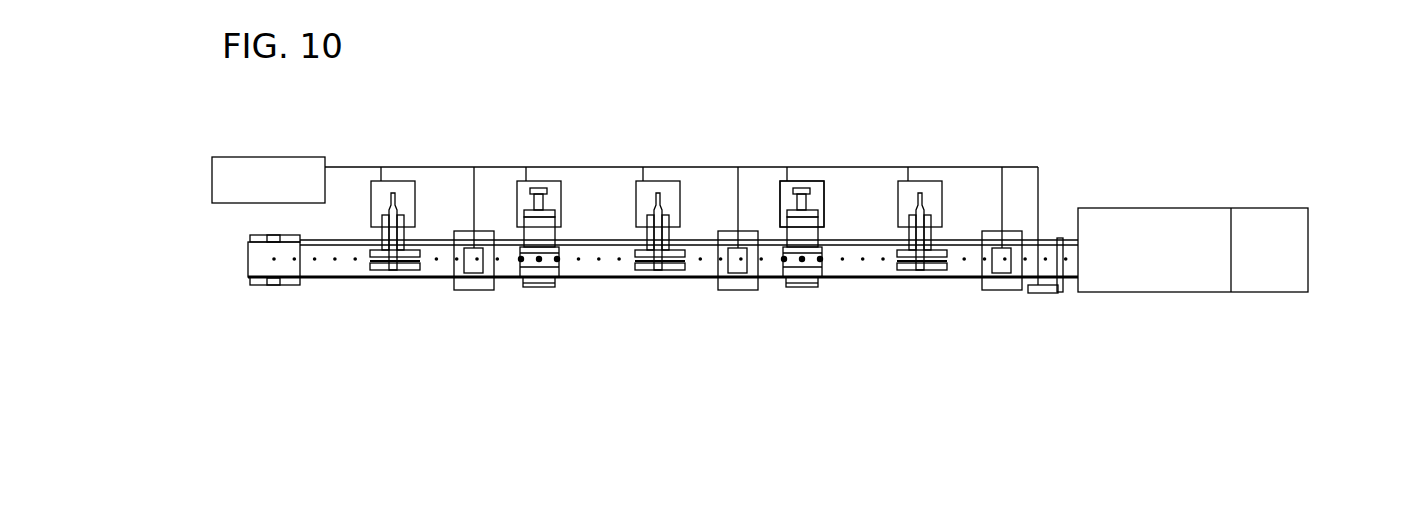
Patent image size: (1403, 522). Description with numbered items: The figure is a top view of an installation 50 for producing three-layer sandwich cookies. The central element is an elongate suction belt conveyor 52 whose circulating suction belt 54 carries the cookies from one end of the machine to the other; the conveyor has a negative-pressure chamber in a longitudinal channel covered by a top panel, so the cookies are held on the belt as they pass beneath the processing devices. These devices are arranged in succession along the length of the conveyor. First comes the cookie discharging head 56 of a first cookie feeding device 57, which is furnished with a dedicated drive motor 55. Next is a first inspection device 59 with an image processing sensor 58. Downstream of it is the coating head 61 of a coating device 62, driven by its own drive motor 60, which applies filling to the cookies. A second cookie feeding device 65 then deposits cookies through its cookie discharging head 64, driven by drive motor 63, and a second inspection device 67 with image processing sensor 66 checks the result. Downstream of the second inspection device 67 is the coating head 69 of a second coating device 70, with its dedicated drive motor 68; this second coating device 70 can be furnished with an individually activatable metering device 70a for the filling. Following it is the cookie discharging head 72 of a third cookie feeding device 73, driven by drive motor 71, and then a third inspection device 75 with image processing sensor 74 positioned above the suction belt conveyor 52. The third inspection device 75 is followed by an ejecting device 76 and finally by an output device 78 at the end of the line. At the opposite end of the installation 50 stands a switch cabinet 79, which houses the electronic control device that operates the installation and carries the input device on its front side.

The installation 50 is at (1236, 140).
The suction belt conveyor 52 is at (310, 285).
The suction belt 54 is at (605, 267).
The drive motor 55 is at (377, 193).
The cookie discharging head 56 is at (380, 265).
The first cookie feeding device 57 is at (408, 203).
The image processing sensor 58 is at (470, 270).
The first inspection device 59 is at (485, 288).
The drive motor 60 is at (554, 192).
The coating head 61 is at (537, 280).
The coating device 62 is at (536, 150).
The drive motor 63 is at (673, 193).
The cookie discharging head 64 is at (670, 268).
The second cookie feeding device 65 is at (665, 150).
The image processing sensor 66 is at (733, 268).
The second inspection device 67 is at (752, 288).
The drive motor 68 is at (820, 190).
The coating head 69 is at (807, 273).
The second coating device 70 is at (800, 150).
The metering device 70a is at (792, 222).
The drive motor 71 is at (940, 193).
The cookie discharging head 72 is at (937, 272).
The third cookie feeding device 73 is at (927, 150).
The image processing sensor 74 is at (997, 272).
The third inspection device 75 is at (1013, 288).
The ejecting device 76 is at (1048, 292).
The output device 78 is at (1137, 218).
The switch cabinet 79 is at (225, 198).